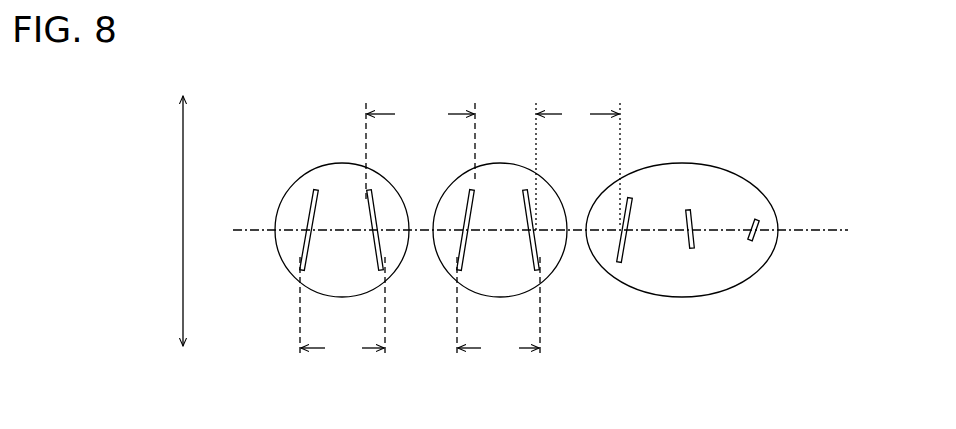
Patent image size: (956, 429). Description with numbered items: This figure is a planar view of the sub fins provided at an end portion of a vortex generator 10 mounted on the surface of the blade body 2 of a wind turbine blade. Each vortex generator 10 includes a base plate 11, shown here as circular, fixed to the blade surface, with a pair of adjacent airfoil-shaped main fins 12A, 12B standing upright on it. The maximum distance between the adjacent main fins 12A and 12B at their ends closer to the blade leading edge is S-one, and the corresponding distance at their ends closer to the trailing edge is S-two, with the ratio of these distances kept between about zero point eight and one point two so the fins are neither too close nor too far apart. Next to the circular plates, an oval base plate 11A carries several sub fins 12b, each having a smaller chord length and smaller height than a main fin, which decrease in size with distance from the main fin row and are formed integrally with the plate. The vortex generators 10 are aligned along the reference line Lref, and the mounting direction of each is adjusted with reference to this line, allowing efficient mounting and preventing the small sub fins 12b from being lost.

The blade body 2 is at (724, 46).
The vortex generator 10 is at (758, 132).
The base plate 11 is at (335, 170).
The base plate 11A is at (745, 210).
The main fin 12A is at (310, 215).
The main fin 12B is at (375, 215).
The sub fin 12b is at (624, 242).
The line Lref is at (826, 235).